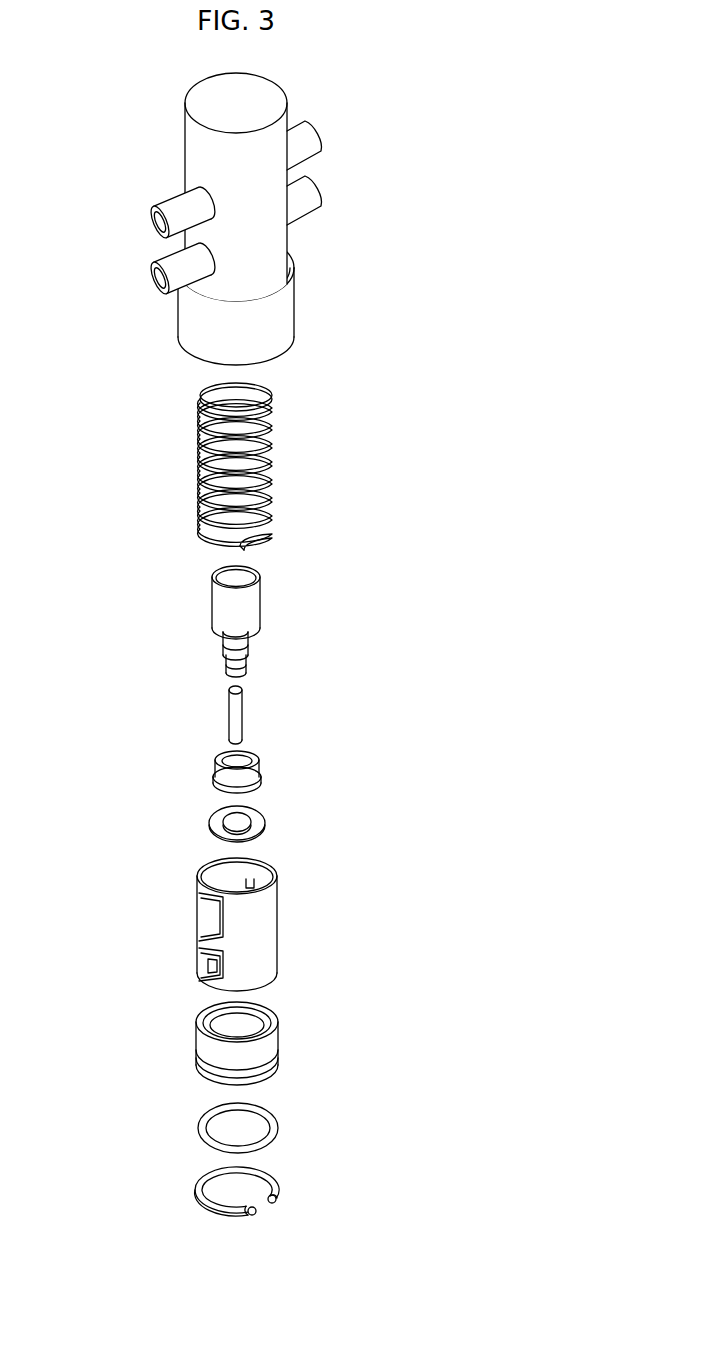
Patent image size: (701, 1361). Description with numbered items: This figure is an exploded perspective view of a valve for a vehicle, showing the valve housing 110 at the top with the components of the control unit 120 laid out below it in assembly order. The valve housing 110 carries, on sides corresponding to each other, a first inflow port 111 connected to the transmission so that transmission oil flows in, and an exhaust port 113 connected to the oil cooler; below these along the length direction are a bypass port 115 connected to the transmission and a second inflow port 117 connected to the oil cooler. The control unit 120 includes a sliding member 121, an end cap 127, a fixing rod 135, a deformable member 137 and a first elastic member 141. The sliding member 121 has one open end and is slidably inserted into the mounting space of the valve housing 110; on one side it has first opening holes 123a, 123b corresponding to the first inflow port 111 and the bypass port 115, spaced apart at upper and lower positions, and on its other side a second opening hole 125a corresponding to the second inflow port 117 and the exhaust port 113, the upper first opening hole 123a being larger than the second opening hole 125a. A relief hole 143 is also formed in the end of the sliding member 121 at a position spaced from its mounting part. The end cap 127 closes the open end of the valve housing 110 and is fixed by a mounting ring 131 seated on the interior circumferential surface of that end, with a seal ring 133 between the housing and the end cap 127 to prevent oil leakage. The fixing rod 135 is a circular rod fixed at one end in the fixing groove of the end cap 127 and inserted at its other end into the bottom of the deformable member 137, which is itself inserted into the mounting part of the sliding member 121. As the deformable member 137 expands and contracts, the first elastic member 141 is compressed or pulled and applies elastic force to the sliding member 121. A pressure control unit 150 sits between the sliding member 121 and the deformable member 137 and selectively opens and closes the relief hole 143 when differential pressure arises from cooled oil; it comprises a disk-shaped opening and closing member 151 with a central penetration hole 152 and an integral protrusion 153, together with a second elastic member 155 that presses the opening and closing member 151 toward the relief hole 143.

The valve housing 110 is at (265, 92).
The first inflow port 111 is at (148, 225).
The exhaust port 113 is at (325, 136).
The bypass port 115 is at (148, 280).
The second inflow port 117 is at (325, 191).
The control unit 120 is at (299, 637).
The sliding member 121 is at (299, 637).
The first opening hole 123a is at (198, 910).
The first opening hole 123b is at (195, 958).
The second opening hole 125a is at (269, 893).
The end cap 127 is at (272, 1048).
The mounting ring 131 is at (280, 1183).
The seal ring 133 is at (200, 1128).
The fixing rod 135 is at (242, 712).
The deformable member 137 is at (280, 595).
The first elastic member 141 is at (274, 440).
The relief hole 143 is at (199, 974).
The pressure control unit 150 is at (218, 803).
The opening and closing member 151 is at (242, 821).
The penetration hole 152 is at (262, 814).
The protrusion 153 is at (250, 827).
The second elastic member 155 is at (213, 784).